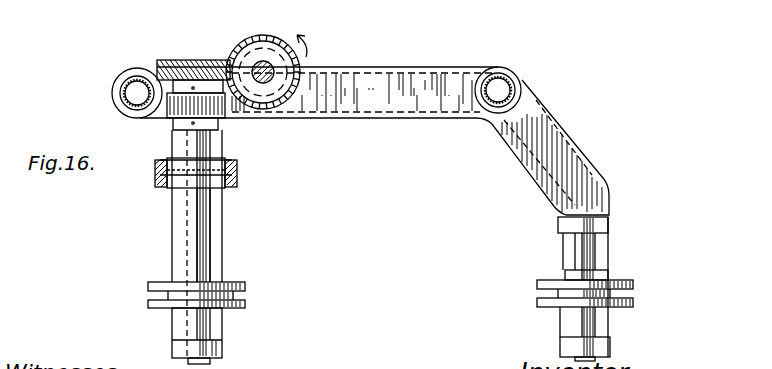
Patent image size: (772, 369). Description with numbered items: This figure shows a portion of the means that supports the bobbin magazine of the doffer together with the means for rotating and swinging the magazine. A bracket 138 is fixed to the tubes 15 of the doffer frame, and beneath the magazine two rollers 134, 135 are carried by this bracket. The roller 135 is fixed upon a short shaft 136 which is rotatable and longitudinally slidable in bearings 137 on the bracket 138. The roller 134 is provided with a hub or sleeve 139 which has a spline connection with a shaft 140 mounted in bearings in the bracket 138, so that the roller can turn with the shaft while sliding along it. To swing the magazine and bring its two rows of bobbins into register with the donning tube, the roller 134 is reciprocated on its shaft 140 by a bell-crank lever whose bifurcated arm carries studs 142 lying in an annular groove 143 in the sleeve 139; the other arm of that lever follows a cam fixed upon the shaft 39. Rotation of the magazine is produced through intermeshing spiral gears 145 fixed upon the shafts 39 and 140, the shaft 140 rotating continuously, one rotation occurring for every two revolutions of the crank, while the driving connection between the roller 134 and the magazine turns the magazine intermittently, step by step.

The tubes 15 is at (135, 78).
The shaft 39 is at (263, 60).
The roller 134 is at (246, 286).
The roller 135 is at (632, 282).
The short shaft 136 is at (582, 247).
The bearings 137 is at (575, 223).
The bracket 138 is at (403, 112).
The hub or sleeve 139 is at (180, 242).
The shaft 140 is at (186, 323).
The studs 142 is at (155, 175).
The annular groove 143 is at (197, 178).
The spiral gears 145 is at (235, 62).